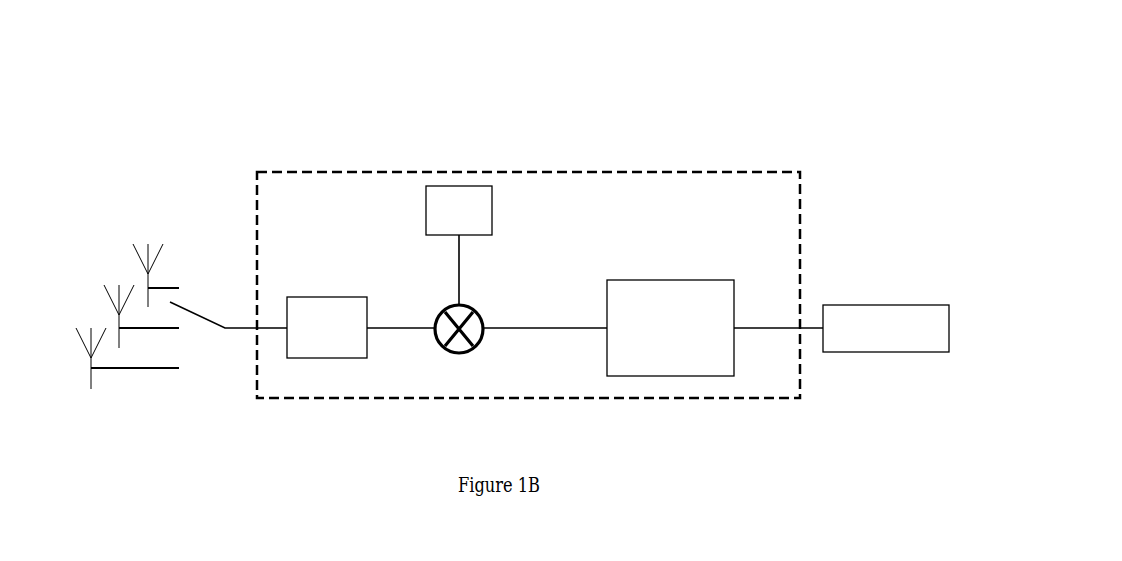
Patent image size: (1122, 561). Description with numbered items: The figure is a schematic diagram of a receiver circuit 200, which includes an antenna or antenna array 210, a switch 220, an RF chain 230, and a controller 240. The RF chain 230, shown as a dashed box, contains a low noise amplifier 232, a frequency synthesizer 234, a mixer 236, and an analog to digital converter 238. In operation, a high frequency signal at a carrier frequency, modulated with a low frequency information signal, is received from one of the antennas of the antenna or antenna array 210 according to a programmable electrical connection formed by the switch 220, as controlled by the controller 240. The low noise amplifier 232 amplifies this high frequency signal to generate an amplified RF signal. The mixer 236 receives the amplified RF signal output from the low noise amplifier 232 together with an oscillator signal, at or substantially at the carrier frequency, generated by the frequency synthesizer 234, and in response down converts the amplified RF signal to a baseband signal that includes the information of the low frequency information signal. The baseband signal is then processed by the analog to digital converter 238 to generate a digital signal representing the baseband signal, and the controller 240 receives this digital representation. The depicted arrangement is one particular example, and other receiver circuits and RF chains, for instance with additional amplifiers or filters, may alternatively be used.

The receiver circuit 200 is at (684, 46).
The antenna or antenna array 210 is at (76, 261).
The switch 220 is at (199, 271).
The RF chain 230 is at (497, 170).
The low noise amplifier 232 is at (357, 298).
The frequency synthesizer 234 is at (492, 216).
The mixer 236 is at (483, 340).
The analog to digital converter 238 is at (734, 288).
The controller 240 is at (897, 303).